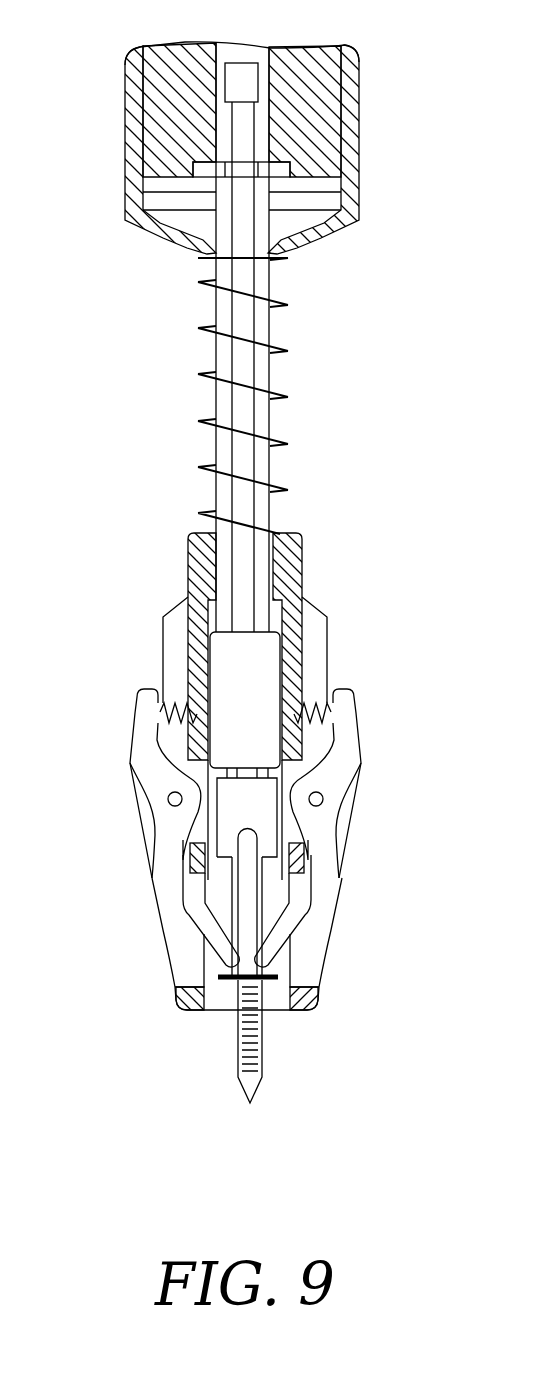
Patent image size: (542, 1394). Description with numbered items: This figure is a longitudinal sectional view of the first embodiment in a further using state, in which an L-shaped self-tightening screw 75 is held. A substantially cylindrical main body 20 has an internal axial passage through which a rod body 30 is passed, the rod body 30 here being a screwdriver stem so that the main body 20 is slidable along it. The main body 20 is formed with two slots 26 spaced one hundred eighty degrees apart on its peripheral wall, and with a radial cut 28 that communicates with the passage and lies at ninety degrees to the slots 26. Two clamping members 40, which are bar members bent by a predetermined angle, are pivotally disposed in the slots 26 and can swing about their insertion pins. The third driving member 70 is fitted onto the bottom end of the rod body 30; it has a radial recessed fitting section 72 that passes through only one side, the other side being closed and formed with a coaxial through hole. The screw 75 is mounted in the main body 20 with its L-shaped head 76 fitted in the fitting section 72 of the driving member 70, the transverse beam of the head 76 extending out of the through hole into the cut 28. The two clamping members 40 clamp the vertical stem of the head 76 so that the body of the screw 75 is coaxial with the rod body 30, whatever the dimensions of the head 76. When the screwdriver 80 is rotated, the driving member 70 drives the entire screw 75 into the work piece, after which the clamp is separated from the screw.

The screwdriver 80 is at (380, 100).
The rod body 30 is at (243, 408).
The main body 20 is at (335, 578).
The third driving member 70 is at (263, 802).
The fitting section 72 is at (262, 842).
The L-shaped head 76 is at (252, 893).
The clamping members 40 is at (176, 848).
The radial cut 28 is at (233, 920).
The slots 26 is at (312, 965).
The L-shaped self-tightening screw 75 is at (258, 1047).